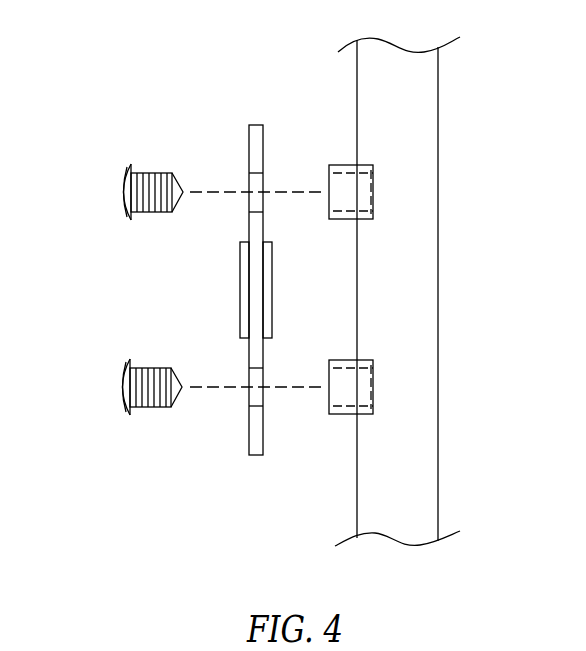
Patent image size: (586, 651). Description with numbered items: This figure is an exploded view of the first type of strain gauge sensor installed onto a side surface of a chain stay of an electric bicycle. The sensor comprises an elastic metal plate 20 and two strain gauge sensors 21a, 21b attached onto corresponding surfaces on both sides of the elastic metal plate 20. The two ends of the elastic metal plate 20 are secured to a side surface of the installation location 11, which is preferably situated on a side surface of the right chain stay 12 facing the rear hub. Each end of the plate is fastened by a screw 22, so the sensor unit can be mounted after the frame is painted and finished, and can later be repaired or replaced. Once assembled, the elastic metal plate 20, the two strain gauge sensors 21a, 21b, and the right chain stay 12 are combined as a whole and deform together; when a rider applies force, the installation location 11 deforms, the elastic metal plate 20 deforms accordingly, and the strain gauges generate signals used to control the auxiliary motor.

The installation location 11 is at (357, 290).
The right chain stay 12 is at (395, 291).
The elastic metal plate 20 is at (255, 284).
The strain gauge sensor 21a is at (245, 280).
The strain gauge sensor 21b is at (268, 283).
The screw 22 is at (120, 189).